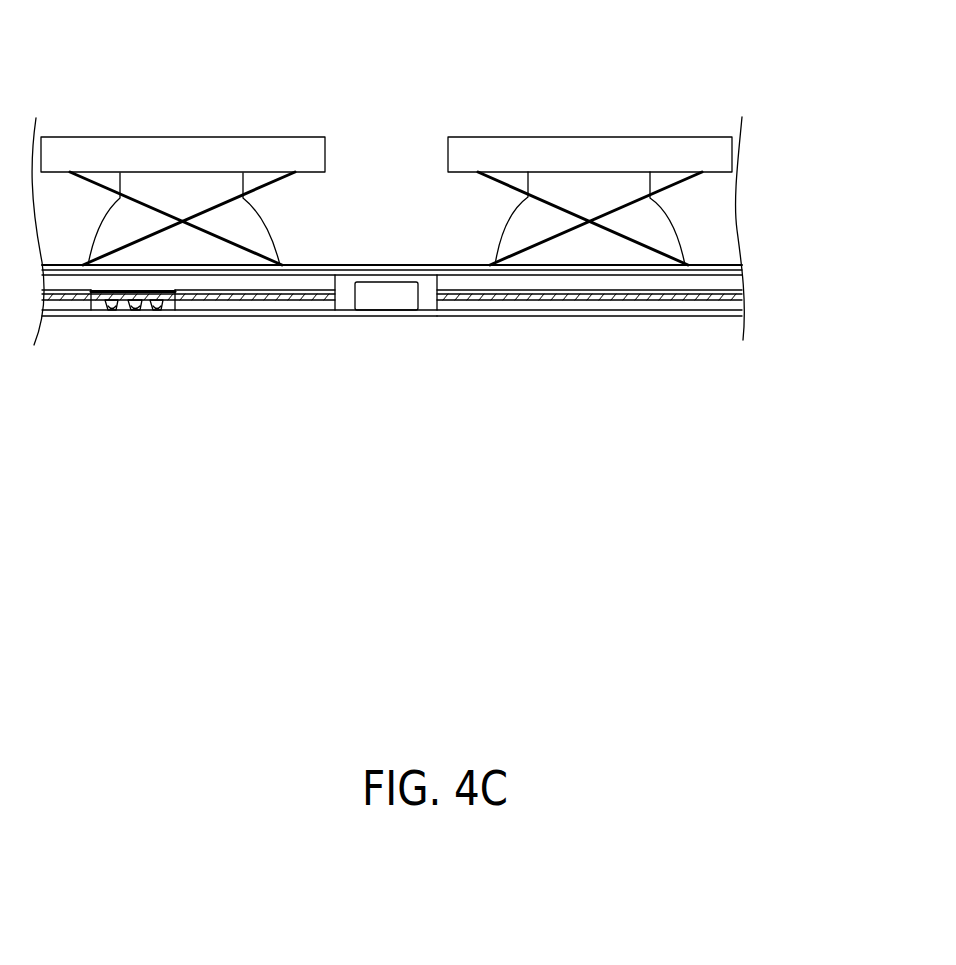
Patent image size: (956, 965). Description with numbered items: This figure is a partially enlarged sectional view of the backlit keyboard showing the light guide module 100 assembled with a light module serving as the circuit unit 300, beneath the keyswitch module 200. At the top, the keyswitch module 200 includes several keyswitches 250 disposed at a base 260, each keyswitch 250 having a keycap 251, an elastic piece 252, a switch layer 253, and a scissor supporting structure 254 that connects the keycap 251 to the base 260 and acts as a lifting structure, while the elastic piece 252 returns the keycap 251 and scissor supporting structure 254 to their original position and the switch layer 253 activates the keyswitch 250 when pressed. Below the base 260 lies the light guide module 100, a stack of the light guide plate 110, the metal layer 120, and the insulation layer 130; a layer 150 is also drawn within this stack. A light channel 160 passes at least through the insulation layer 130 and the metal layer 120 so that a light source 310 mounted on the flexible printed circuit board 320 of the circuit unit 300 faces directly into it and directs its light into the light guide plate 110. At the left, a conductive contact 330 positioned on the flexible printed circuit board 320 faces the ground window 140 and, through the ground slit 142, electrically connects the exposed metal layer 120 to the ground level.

The light guide module 100 is at (466, 298).
The light guide plate 110 is at (748, 285).
The metal layer 120 is at (748, 300).
The insulation layer 130 is at (745, 318).
The ground window 140 is at (170, 312).
The ground slit 142 is at (110, 313).
The adhesive layer 150 is at (748, 292).
The light channel 160 is at (347, 305).
The keyswitch module 200 is at (414, 135).
The keyswitch 250 is at (391, 135).
The keycap 251 is at (100, 155).
The elastic piece 252 is at (140, 190).
The switch layer 253 is at (203, 266).
The scissor supporting structure 254 is at (183, 220).
The base 260 is at (310, 273).
The circuit unit 300 is at (72, 316).
The light source 310 is at (393, 305).
The flexible printed circuit board 320 is at (465, 313).
The conductive contact 330 is at (112, 315).